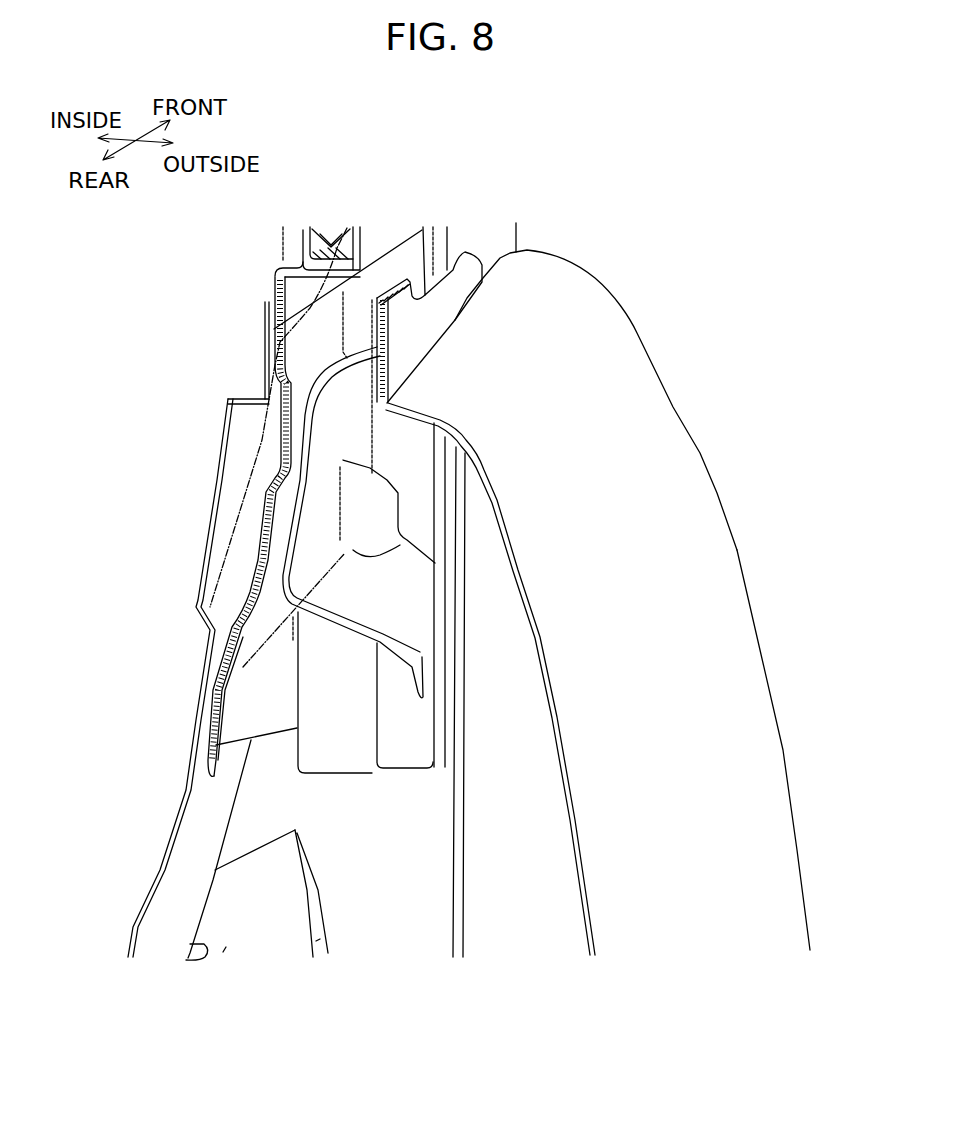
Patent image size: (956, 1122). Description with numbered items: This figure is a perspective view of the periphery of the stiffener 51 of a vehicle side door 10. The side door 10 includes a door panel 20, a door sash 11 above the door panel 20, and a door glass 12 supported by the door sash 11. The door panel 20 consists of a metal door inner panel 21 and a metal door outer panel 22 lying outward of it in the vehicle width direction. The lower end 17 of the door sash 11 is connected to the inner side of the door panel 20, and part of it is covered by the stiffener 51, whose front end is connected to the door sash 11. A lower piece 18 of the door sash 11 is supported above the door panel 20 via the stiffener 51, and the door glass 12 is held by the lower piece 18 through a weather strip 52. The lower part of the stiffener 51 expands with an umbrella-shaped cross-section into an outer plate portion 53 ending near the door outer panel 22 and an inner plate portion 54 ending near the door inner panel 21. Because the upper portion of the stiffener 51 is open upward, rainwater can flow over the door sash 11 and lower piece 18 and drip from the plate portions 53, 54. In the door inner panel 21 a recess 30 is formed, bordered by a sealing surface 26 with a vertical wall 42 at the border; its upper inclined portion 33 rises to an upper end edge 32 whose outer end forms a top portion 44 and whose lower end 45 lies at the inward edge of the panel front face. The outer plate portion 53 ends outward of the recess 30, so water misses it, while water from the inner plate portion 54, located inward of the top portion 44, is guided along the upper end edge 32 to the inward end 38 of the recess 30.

The vehicle side door 10 is at (686, 232).
The door sash 11 is at (290, 657).
The door glass 12 is at (330, 228).
The lower end of the door sash 17 is at (378, 788).
The lower piece of the door sash 18 is at (266, 350).
The door panel 20 is at (649, 337).
The door inner panel 21 is at (210, 503).
The door outer panel 22 is at (667, 508).
The sealing surface 26 is at (420, 912).
The recess 30 is at (208, 923).
The upper end edge 32 is at (243, 853).
The upper inclined portion 33 is at (223, 952).
The inward end of the recess 38 is at (186, 960).
The vertical wall 42 is at (320, 939).
The top portion 44 is at (295, 830).
The lower end of the inclined edge 45 is at (215, 870).
The stiffener 51 is at (412, 489).
The weather strip 52 is at (347, 228).
The outer plate portion 53 is at (380, 630).
The inner plate portion 54 is at (203, 687).